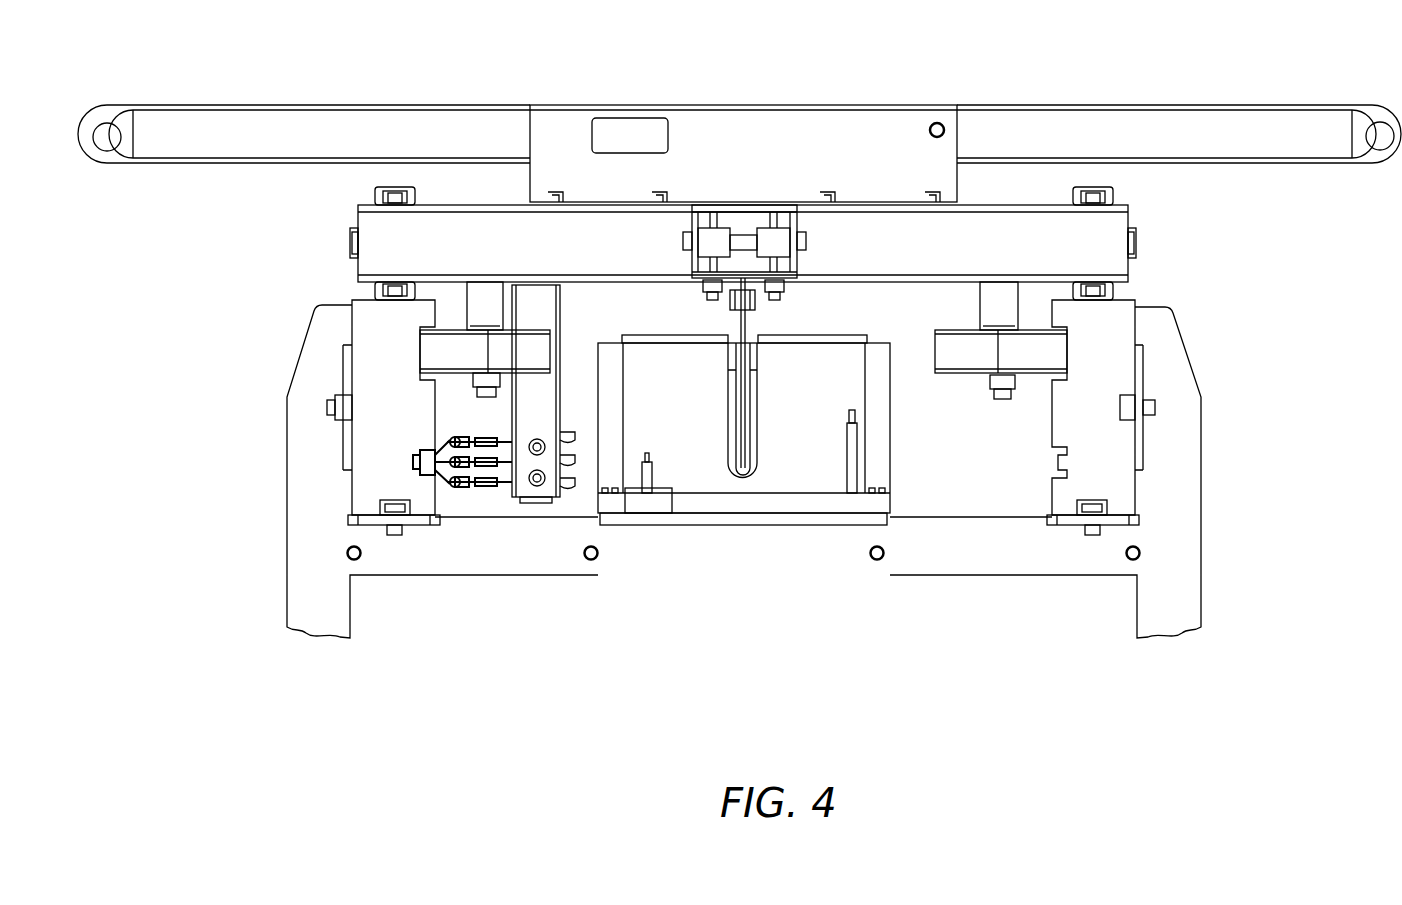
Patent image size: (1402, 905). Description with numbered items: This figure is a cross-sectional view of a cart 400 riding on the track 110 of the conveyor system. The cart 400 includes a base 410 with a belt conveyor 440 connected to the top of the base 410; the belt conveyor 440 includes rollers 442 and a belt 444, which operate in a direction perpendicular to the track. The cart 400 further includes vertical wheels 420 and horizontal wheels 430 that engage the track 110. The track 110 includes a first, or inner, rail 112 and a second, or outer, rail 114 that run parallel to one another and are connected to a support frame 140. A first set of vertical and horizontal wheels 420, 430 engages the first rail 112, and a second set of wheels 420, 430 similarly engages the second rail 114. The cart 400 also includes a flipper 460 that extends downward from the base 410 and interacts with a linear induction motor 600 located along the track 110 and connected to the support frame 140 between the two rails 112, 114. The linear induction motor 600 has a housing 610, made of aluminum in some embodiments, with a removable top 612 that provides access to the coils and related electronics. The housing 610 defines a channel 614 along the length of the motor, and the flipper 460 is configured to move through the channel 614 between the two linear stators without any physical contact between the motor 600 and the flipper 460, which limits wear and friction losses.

The track 110 is at (1192, 370).
The first rail 112 is at (352, 300).
The second rail 114 is at (1135, 300).
The support frame 140 is at (287, 490).
The cart 400 is at (739, 243).
The base 410 is at (358, 218).
The vertical wheels 420 is at (375, 292).
The horizontal wheels 430 is at (537, 330).
The belt conveyor 440 is at (241, 105).
The rollers 442 is at (107, 140).
The belt 444 is at (1040, 105).
The flipper 460 is at (747, 340).
The linear induction motor 600 is at (756, 379).
The housing 610 is at (890, 360).
The removable top 612 is at (645, 335).
The channel 614 is at (730, 345).